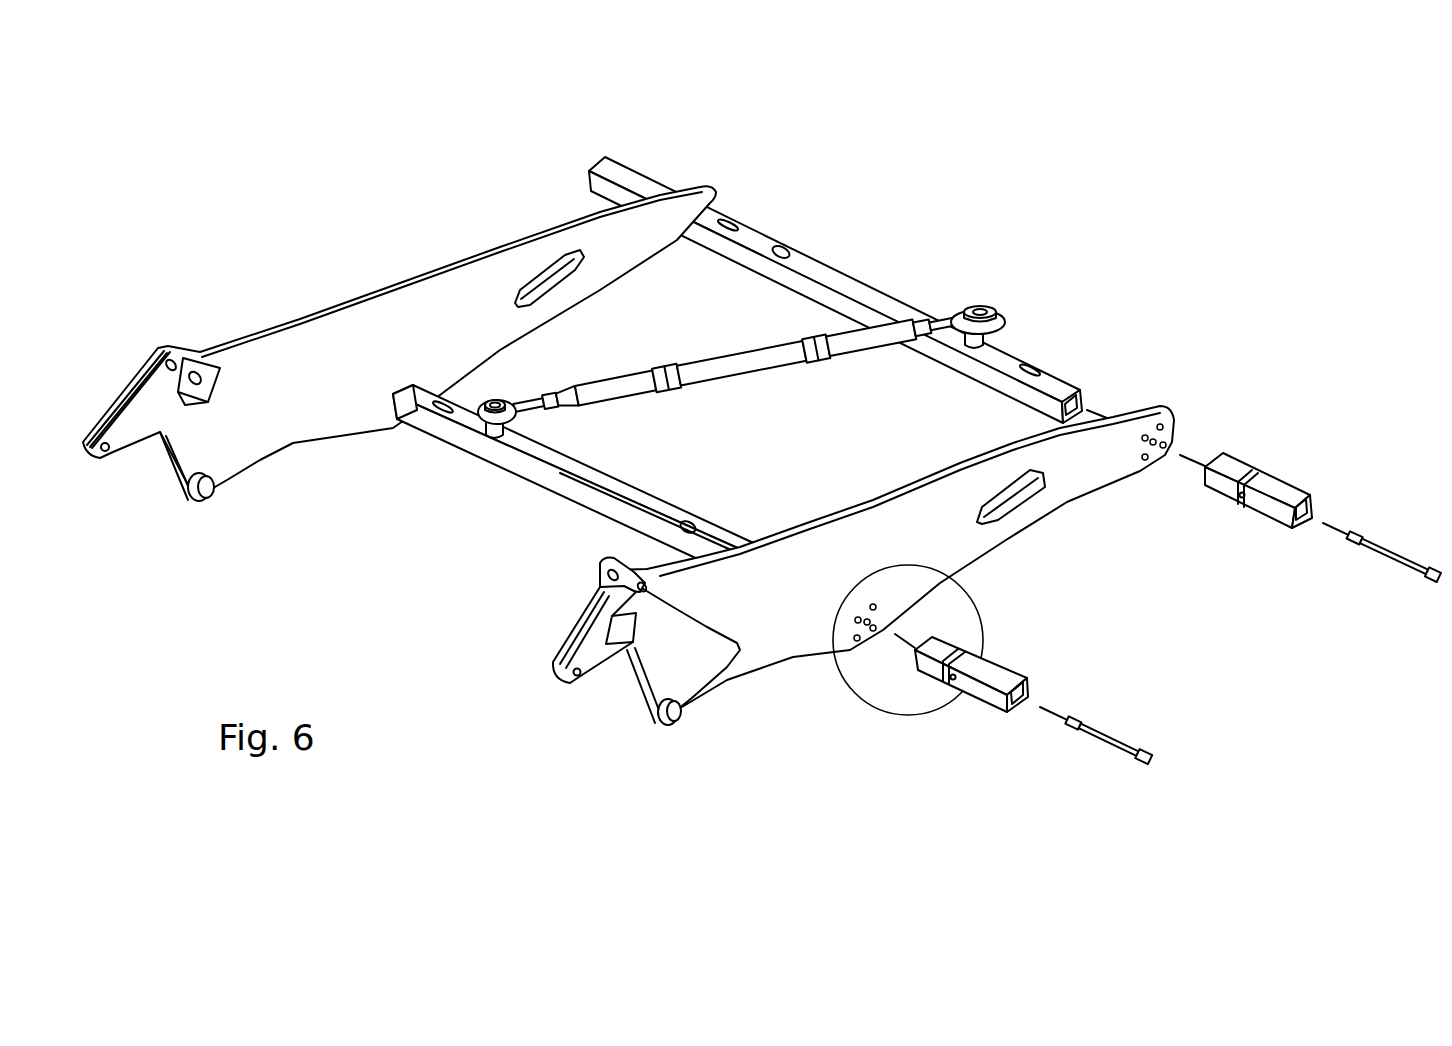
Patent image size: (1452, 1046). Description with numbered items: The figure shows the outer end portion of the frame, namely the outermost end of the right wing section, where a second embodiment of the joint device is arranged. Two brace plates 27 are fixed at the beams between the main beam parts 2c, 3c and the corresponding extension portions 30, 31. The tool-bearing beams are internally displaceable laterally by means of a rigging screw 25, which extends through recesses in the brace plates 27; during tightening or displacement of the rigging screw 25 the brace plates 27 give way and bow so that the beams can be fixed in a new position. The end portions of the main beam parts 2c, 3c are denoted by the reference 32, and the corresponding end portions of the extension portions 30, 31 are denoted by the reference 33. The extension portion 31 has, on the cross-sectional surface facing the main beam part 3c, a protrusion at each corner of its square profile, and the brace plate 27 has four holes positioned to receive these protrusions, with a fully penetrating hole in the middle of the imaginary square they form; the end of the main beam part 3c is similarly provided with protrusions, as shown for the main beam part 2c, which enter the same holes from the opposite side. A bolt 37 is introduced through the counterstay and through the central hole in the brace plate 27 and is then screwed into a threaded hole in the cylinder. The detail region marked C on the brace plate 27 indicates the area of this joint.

The brace plate 27 is at (295, 358).
The main beam part 2c is at (828, 272).
The main beam part 3c is at (527, 447).
The rigging screw 25 is at (714, 373).
The end portion of main beam part 32 is at (1084, 393).
The end portion of extension portion 33 is at (1201, 451).
The extension portion 30 is at (1287, 480).
The extension portion 31 is at (1000, 665).
The bolt 37 is at (1397, 561).
The detail circle C is at (852, 690).